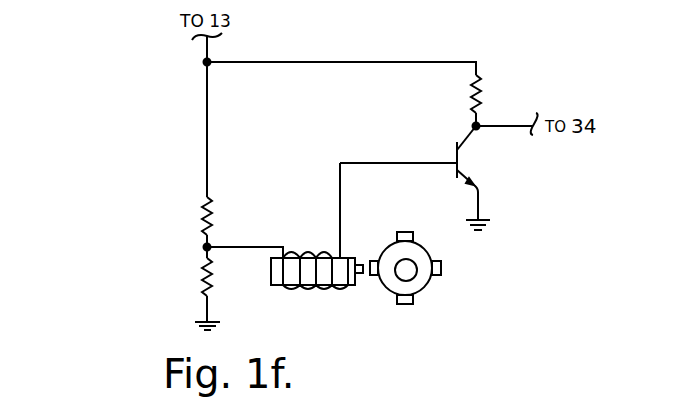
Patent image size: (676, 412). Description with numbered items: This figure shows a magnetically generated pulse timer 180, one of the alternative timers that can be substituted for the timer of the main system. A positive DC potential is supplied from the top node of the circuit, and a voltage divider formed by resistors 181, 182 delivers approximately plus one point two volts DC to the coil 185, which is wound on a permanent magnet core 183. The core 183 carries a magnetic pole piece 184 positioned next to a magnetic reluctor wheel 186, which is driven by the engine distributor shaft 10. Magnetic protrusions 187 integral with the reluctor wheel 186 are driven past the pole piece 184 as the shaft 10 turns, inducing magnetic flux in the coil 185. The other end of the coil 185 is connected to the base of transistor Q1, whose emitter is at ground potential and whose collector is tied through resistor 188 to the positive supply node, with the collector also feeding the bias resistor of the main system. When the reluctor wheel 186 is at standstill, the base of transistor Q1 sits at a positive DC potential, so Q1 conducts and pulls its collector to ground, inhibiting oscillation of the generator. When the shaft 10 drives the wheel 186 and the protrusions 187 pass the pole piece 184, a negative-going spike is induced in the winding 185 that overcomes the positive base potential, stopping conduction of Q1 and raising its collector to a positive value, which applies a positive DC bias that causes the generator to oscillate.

The magnetically generated pulse timer 180 is at (142, 131).
The voltage divider resistor 181 is at (205, 210).
The voltage divider resistor 182 is at (214, 282).
The permanent magnet core 183 is at (278, 286).
The magnetic pole piece 184 is at (360, 276).
The coil 185 is at (300, 256).
The magnetic reluctor wheel 186 is at (421, 250).
The magnetic protrusions 187 is at (372, 262).
The resistor 188 is at (481, 82).
The engine distributor shaft 10 is at (406, 276).
The transistor Q1 is at (416, 178).